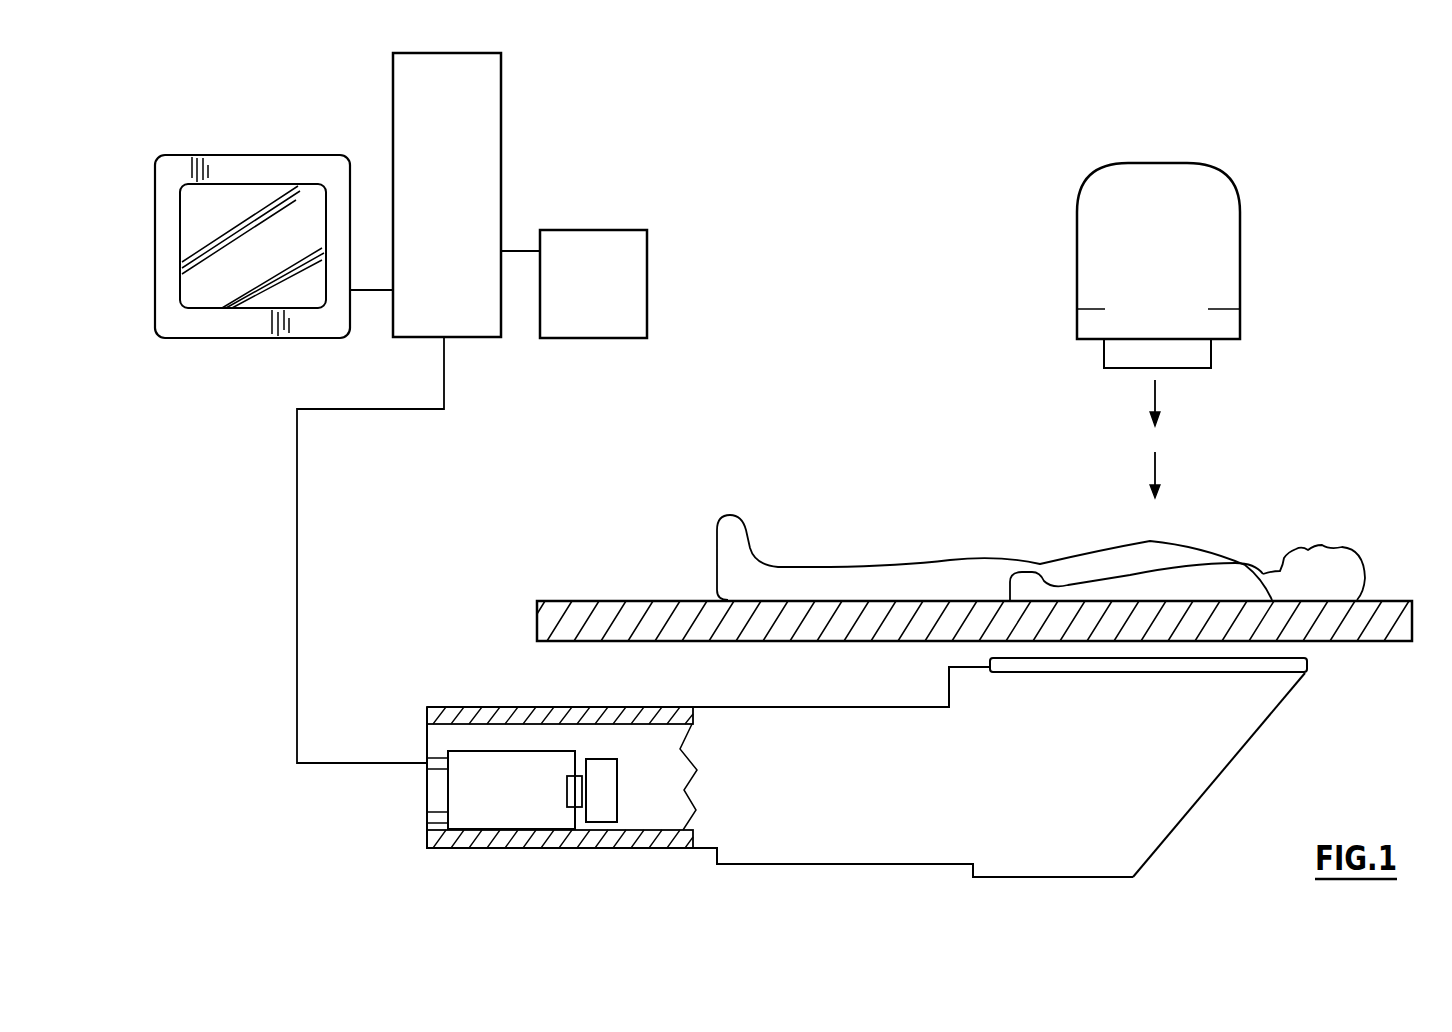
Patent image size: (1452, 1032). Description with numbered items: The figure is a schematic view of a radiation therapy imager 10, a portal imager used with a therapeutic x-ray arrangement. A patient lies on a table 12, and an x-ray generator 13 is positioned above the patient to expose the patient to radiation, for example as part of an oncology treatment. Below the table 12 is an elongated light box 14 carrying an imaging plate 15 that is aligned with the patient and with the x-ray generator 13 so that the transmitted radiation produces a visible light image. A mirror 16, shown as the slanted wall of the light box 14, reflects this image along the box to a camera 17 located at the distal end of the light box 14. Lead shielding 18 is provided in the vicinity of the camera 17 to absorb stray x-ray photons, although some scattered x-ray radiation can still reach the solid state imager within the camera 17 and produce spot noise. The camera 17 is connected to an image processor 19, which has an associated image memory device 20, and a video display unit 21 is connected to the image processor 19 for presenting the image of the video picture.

The radiation therapy imager 10 is at (1347, 713).
The table 12 is at (1383, 600).
The x-ray generator 13 is at (1240, 250).
The elongated light box 14 is at (1063, 877).
The imaging plate 15 is at (1115, 672).
The mirror 16 is at (1187, 812).
The camera 17 is at (521, 800).
The lead shielding 18 is at (550, 707).
The image processor 19 is at (501, 93).
The image memory device 20 is at (610, 230).
The video display unit 21 is at (276, 155).